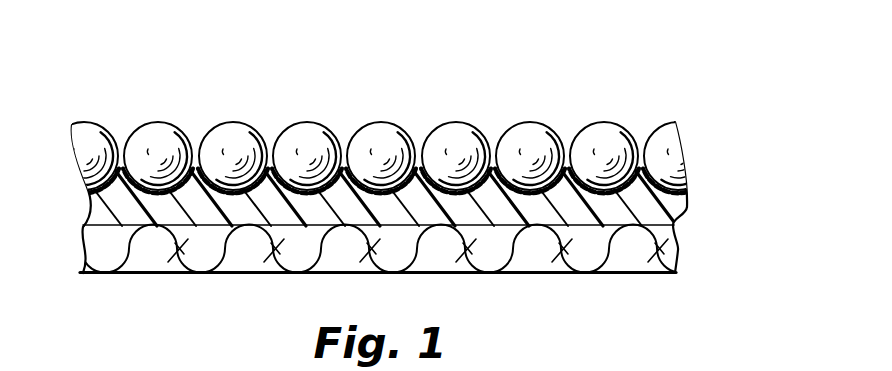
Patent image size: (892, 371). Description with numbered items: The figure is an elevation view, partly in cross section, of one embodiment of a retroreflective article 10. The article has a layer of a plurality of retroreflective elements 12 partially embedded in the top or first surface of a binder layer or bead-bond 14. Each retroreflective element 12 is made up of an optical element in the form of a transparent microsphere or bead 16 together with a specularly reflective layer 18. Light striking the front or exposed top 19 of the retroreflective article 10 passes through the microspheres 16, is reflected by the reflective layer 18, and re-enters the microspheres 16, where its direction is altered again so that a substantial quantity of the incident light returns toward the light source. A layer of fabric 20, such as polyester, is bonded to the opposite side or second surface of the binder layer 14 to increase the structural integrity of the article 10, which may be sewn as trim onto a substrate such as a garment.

The retroreflective article 10 is at (474, 50).
The retroreflective elements 12 is at (551, 112).
The binder layer 14 is at (102, 212).
The transparent microsphere 16 is at (168, 137).
The specularly reflective layer 18 is at (688, 198).
The exposed top 19 is at (378, 122).
The layer of fabric 20 is at (638, 263).